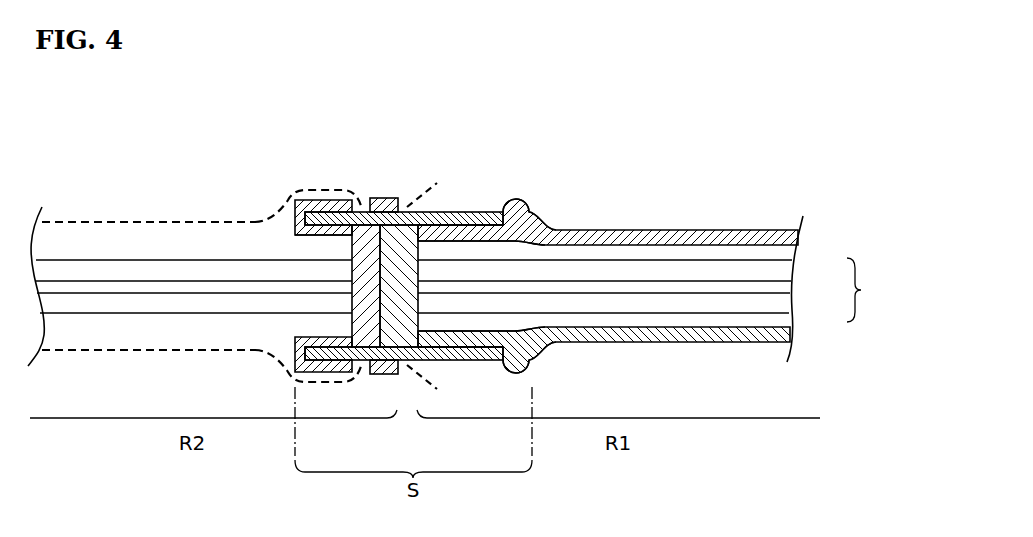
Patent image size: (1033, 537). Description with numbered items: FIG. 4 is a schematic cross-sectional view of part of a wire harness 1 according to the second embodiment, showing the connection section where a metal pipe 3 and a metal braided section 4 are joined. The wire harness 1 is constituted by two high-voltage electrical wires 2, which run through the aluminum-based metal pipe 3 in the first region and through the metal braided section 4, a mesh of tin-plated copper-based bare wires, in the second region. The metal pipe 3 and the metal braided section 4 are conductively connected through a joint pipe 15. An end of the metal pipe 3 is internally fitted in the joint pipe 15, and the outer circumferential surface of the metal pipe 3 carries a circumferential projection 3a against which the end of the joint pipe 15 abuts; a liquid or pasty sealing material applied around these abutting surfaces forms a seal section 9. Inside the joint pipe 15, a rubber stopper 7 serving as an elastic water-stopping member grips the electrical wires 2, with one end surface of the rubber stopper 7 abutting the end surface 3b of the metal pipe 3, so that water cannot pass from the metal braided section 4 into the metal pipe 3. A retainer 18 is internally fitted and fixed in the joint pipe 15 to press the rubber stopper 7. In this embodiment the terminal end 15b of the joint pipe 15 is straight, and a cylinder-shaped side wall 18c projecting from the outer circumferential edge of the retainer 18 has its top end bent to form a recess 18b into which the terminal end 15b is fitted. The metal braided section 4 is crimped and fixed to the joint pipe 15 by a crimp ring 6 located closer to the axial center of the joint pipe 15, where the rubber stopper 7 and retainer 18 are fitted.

The wire harness 1 is at (454, 290).
The high-voltage electrical wires 2 is at (780, 270).
The metal pipe 3 is at (651, 213).
The projection 3a is at (545, 225).
The end surface 3b is at (457, 214).
The metal braided section 4 is at (134, 214).
The crimp ring 6 is at (391, 198).
The rubber stopper 7 is at (402, 302).
The seal section 9 is at (518, 201).
The joint pipe 15 is at (443, 206).
The terminal end 15b is at (327, 212).
The retainer 18 is at (364, 253).
The recess 18b is at (283, 206).
The side wall 18c is at (316, 236).